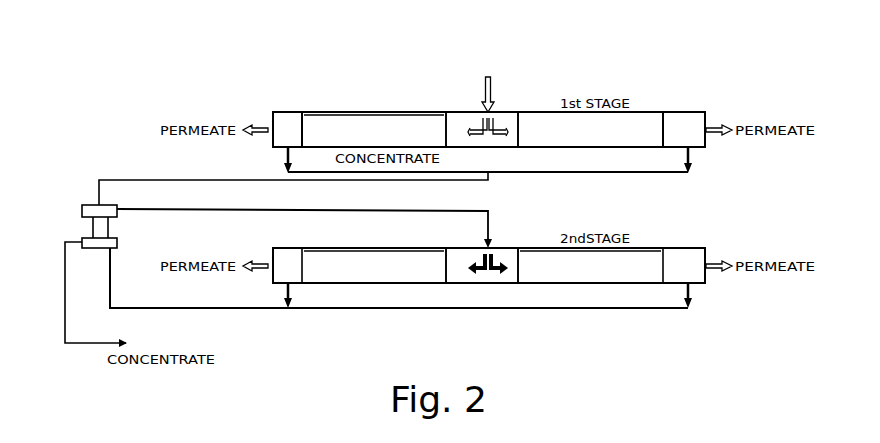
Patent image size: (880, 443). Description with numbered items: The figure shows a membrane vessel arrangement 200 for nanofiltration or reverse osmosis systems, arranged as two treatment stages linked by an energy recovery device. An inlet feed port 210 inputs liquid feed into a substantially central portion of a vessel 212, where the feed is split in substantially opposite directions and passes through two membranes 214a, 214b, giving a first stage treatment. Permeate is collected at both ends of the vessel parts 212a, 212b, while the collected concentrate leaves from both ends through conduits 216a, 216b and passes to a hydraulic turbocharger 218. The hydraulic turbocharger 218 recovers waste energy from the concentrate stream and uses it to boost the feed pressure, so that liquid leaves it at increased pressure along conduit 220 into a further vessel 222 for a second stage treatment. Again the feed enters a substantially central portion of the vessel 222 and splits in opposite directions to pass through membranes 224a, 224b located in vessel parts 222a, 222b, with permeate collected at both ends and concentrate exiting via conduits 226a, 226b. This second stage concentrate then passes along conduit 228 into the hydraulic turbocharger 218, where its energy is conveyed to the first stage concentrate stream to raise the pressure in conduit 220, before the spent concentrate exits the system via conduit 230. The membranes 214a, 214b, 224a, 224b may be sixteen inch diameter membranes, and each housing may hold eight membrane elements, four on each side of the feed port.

The membrane vessel arrangement 200 is at (585, 68).
The inlet feed port 210 is at (484, 82).
The vessel 212 is at (453, 110).
The vessel part 212a is at (324, 112).
The vessel part 212b is at (642, 112).
The membrane 214a is at (374, 129).
The membrane 214b is at (590, 129).
The conduit 216a is at (284, 160).
The conduit 216b is at (694, 162).
The hydraulic turbocharger 218 is at (88, 205).
The conduit 220 is at (290, 211).
The further vessel 222 is at (504, 247).
The vessel part 222a is at (407, 284).
The vessel part 222b is at (552, 285).
The membrane 224a is at (374, 264).
The membrane 224b is at (590, 264).
The conduit 226a is at (295, 290).
The conduit 226b is at (693, 290).
The 2nd stage concentrate stream conduit 228 is at (213, 310).
The conduit 230 is at (93, 348).